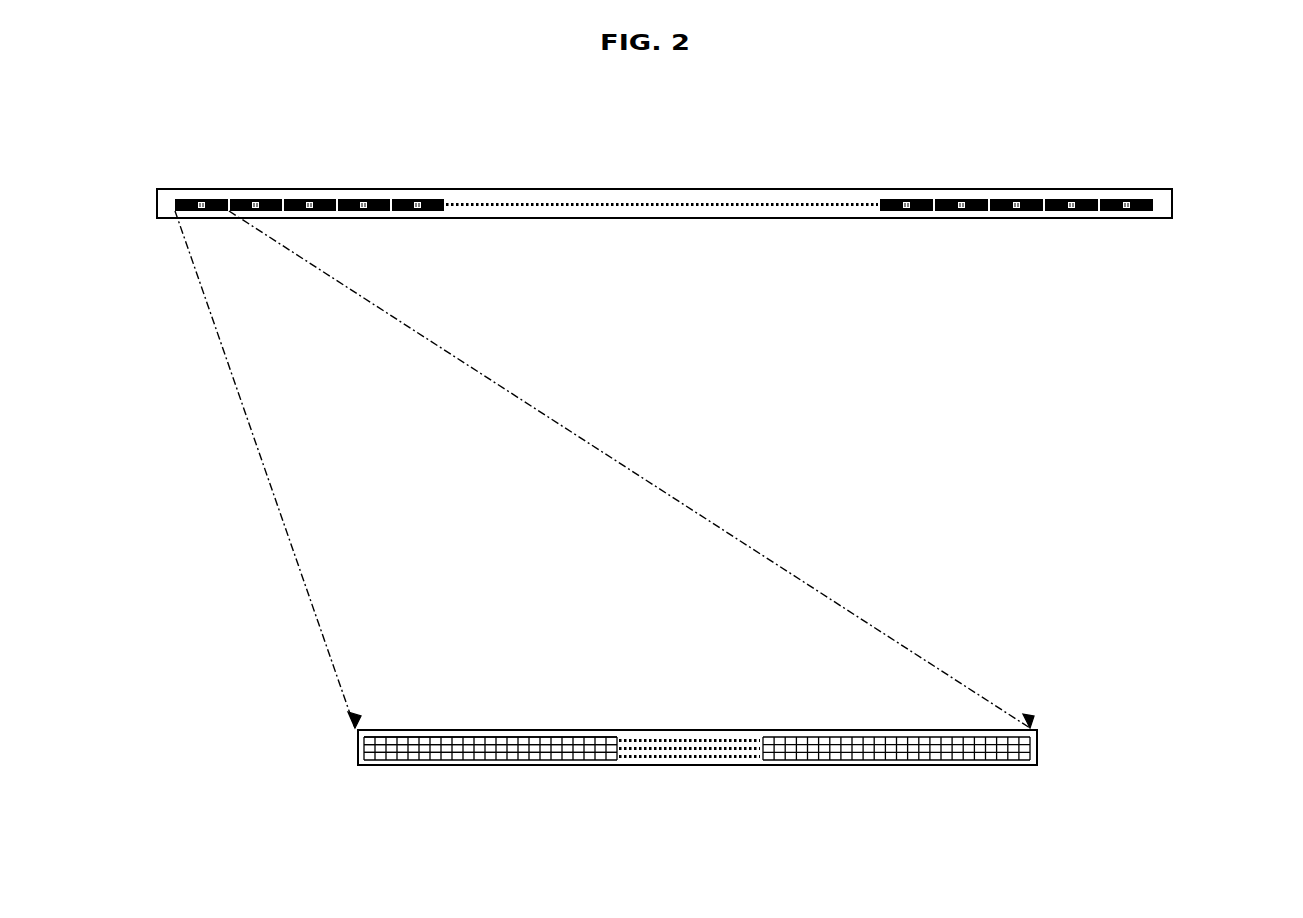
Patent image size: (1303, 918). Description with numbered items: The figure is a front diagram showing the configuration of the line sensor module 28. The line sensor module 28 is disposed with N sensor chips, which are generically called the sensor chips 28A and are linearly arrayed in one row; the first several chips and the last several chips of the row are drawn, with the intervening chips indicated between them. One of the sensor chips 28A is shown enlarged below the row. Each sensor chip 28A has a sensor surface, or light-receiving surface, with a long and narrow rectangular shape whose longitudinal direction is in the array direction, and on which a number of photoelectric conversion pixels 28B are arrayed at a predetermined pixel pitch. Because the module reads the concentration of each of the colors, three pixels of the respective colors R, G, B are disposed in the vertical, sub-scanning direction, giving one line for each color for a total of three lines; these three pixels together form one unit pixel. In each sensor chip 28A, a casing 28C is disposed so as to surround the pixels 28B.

The line sensor module 28 is at (762, 190).
The sensor chip 28A is at (713, 766).
The pixel 28B is at (540, 750).
The casing 28C is at (698, 735).
The red pixel line R is at (358, 741).
The green pixel line G is at (358, 748).
The blue pixel line B is at (358, 755).